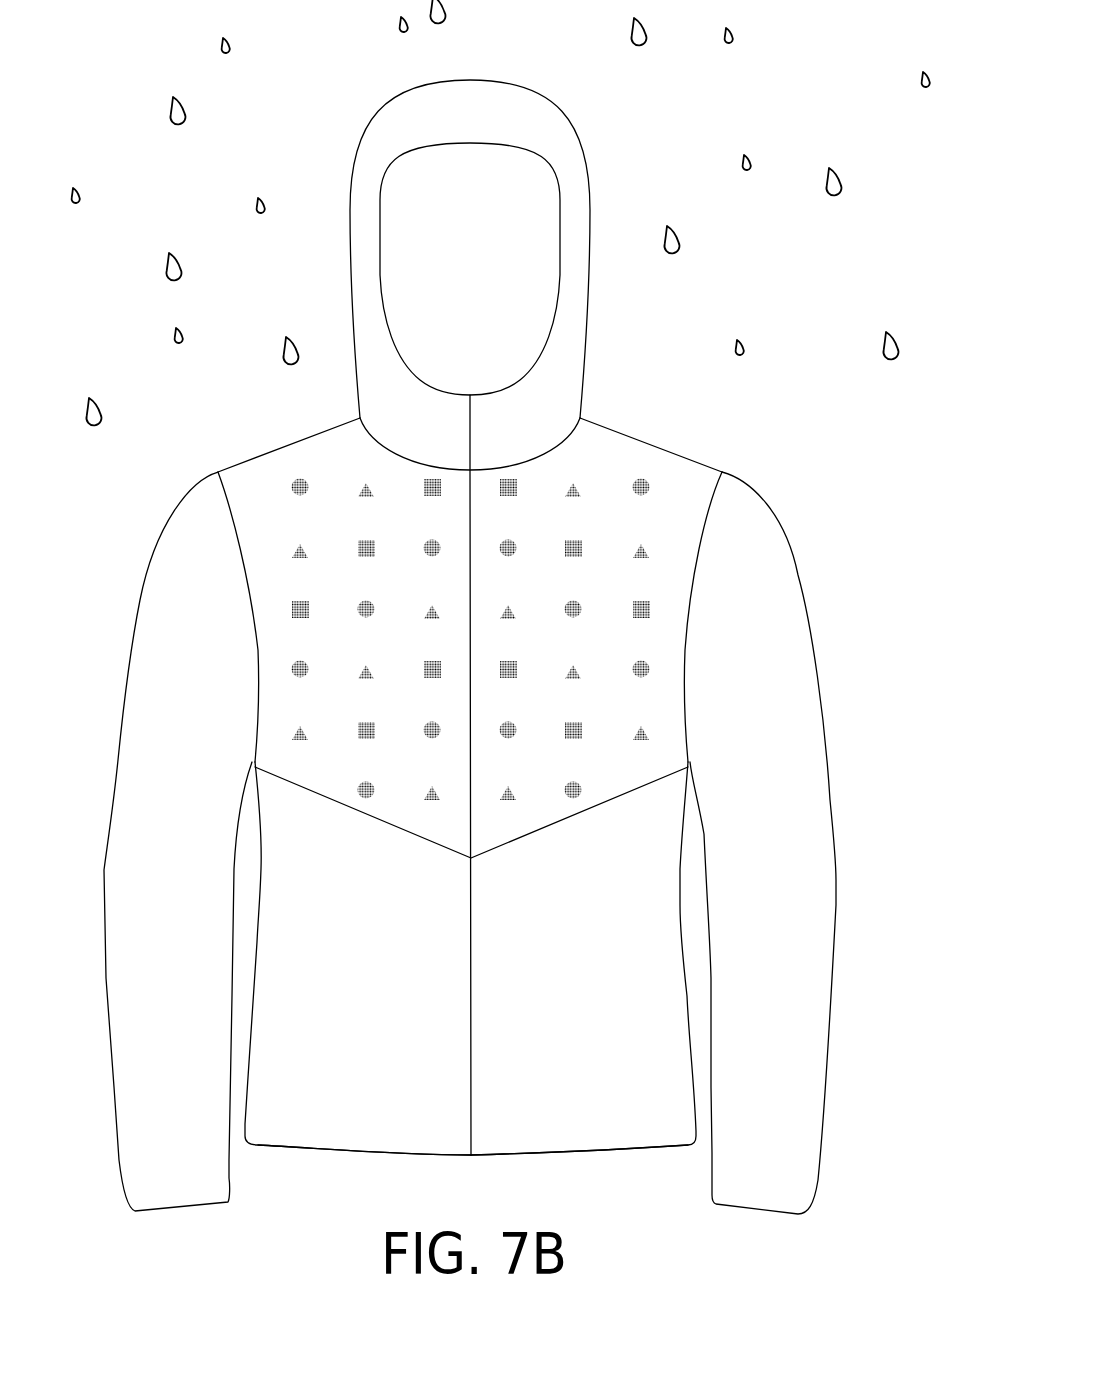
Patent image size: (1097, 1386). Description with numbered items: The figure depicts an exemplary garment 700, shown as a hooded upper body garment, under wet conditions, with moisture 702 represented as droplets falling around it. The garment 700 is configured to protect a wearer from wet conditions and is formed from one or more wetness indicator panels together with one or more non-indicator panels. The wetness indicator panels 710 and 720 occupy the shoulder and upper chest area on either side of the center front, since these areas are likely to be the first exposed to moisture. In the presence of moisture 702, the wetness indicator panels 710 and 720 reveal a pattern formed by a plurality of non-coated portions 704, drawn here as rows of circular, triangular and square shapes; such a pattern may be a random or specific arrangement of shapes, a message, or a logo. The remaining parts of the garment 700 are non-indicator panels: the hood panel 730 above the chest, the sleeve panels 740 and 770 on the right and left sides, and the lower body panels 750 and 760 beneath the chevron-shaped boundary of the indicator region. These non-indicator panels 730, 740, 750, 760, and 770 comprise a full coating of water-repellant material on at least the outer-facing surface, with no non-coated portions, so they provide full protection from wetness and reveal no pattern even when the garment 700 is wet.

The garment 700 is at (867, 37).
The moisture 702 is at (840, 176).
The non-coated portions 704 is at (646, 728).
The wetness indicator panel 710 is at (695, 470).
The wetness indicator panel 720 is at (248, 470).
The non-indicator panel 730 is at (565, 384).
The non-indicator panel 740 is at (783, 660).
The non-indicator panel 750 is at (589, 1127).
The non-indicator panel 760 is at (352, 1127).
The non-indicator panel 770 is at (133, 845).